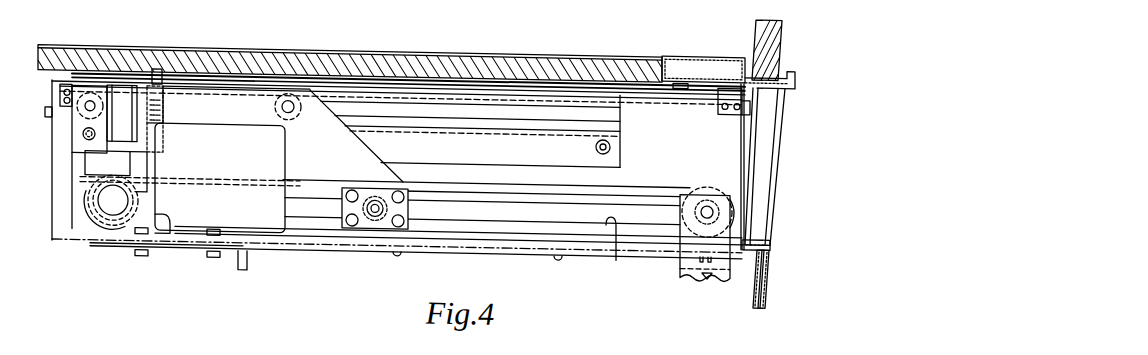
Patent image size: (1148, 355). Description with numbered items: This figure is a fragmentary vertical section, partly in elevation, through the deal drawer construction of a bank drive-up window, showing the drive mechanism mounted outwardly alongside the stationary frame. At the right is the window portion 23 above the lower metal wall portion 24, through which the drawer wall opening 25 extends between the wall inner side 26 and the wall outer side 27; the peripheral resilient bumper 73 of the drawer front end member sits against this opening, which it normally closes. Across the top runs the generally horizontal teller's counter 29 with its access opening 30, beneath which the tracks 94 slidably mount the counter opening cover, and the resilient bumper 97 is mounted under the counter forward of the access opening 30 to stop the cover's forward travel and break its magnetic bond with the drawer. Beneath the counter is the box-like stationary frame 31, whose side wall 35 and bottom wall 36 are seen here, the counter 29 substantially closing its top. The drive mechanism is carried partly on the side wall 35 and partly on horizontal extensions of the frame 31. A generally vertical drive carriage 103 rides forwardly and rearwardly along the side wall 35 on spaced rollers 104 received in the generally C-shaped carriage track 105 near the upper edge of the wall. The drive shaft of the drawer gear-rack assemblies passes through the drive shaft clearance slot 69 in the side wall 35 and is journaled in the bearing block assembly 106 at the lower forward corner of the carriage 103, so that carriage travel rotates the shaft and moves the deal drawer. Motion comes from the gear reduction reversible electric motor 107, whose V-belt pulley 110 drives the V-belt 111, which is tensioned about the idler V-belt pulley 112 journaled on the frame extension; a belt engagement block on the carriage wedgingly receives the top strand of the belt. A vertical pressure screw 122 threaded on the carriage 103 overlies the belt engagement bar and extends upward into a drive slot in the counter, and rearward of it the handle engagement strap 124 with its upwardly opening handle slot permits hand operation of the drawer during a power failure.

The window portion 23 is at (770, 8).
The lower metal wall portion 24 is at (768, 261).
The drawer wall opening 25 is at (770, 226).
The wall inner side 26 is at (757, 286).
The wall outer side 27 is at (765, 286).
The teller's counter 29 is at (402, 61).
The access opening 30 is at (447, 48).
The stationary frame 31 is at (578, 246).
The stationary frame side wall 35 is at (657, 152).
The bottom wall 36 is at (485, 241).
The drive shaft clearance slot 69 is at (609, 213).
The peripheral resilient bumper 73 is at (765, 108).
The tracks 94 is at (365, 75).
The resilient bumper 97 is at (678, 70).
The drive carriage 103 is at (242, 98).
The rollers 104 is at (77, 116).
The carriage track 105 is at (590, 107).
The bearing block assembly 106 is at (90, 227).
The gear reduction reversible electric motor 107 is at (250, 211).
The V-belt pulley 110 is at (95, 202).
The V-belt 111 is at (462, 174).
The idler V-belt pulley 112 is at (712, 172).
The pressure screw 122 is at (160, 105).
The handle engagement strap 124 is at (120, 92).